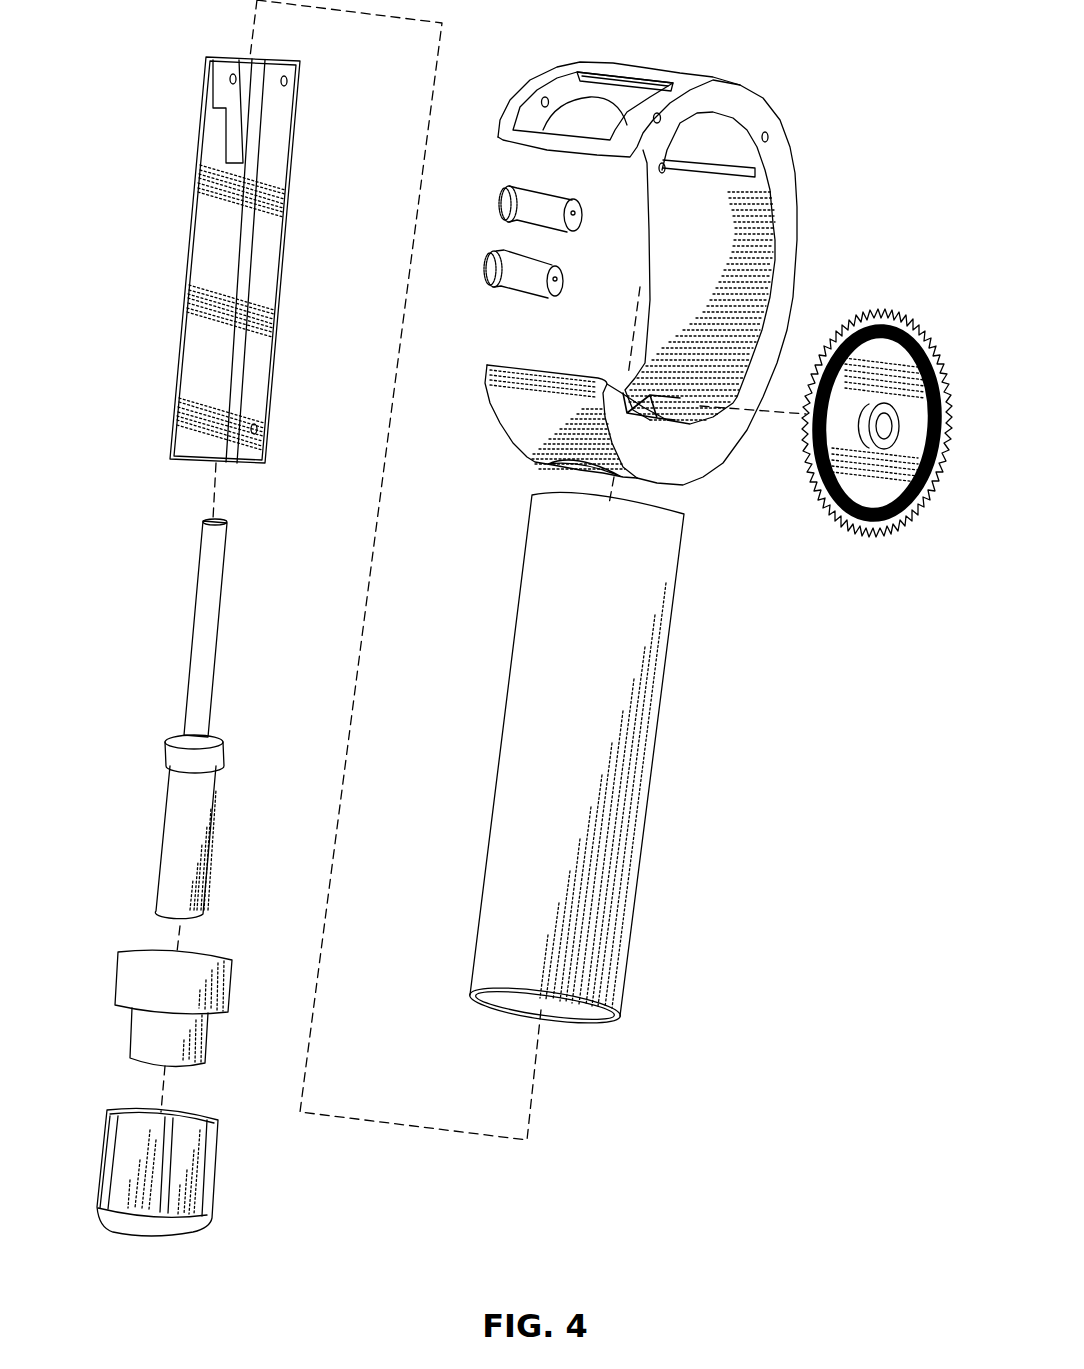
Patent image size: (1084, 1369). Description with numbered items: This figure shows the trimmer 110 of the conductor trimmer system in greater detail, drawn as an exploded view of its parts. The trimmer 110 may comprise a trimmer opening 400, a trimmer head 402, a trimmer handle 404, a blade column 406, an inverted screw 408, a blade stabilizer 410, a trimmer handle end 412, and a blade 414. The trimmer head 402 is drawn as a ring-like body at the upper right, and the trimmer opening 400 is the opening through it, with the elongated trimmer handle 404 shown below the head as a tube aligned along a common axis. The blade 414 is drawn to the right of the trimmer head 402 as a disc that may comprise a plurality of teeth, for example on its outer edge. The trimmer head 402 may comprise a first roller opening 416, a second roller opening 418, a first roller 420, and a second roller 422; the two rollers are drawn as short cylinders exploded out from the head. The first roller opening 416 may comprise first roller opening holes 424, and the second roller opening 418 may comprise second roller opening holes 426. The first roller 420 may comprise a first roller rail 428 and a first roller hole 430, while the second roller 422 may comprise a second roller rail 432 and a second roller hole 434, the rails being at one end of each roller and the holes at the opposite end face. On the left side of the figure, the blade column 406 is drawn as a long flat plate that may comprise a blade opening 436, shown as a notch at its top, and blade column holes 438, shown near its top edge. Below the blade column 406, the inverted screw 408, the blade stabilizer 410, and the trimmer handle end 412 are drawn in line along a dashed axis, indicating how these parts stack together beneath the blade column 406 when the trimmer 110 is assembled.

The trimmer 110 is at (776, 33).
The trimmer opening 400 is at (676, 253).
The trimmer head 402 is at (683, 253).
The trimmer handle 404 is at (602, 775).
The blade column 406 is at (213, 234).
The inverted screw 408 is at (168, 847).
The blade stabilizer 410 is at (117, 988).
The trimmer handle end 412 is at (100, 1168).
The blade 414 is at (900, 460).
The first roller opening 416 is at (583, 120).
The second roller opening 418 is at (713, 136).
The first roller 420 is at (542, 299).
The second roller 422 is at (533, 187).
The first roller opening holes 424 is at (660, 116).
The second roller opening holes 426 is at (767, 136).
The first roller rail 428 is at (496, 282).
The first roller hole 430 is at (560, 281).
The second roller rail 432 is at (504, 200).
The second roller hole 434 is at (606, 203).
The blade opening 436 is at (235, 133).
The blade column holes 438 is at (286, 77).